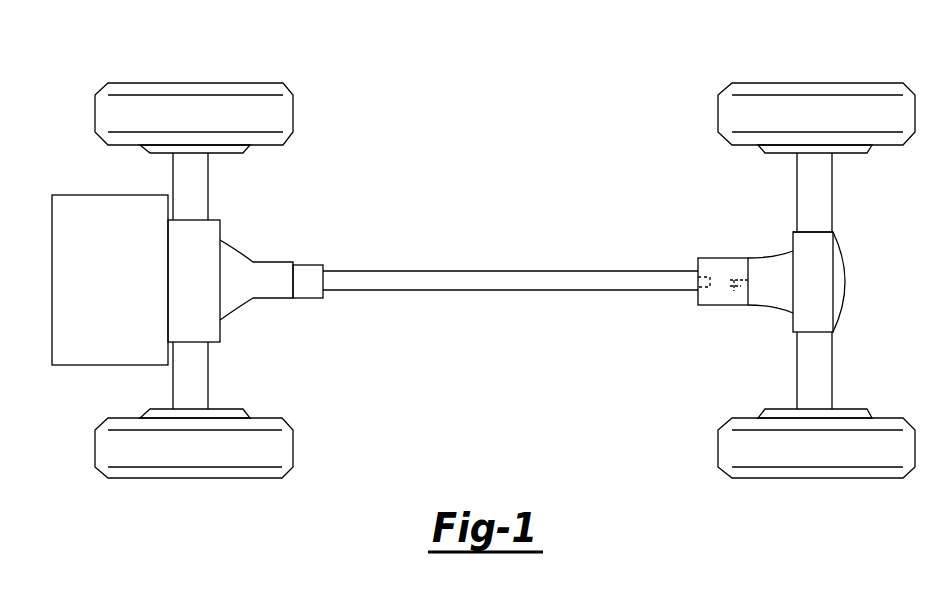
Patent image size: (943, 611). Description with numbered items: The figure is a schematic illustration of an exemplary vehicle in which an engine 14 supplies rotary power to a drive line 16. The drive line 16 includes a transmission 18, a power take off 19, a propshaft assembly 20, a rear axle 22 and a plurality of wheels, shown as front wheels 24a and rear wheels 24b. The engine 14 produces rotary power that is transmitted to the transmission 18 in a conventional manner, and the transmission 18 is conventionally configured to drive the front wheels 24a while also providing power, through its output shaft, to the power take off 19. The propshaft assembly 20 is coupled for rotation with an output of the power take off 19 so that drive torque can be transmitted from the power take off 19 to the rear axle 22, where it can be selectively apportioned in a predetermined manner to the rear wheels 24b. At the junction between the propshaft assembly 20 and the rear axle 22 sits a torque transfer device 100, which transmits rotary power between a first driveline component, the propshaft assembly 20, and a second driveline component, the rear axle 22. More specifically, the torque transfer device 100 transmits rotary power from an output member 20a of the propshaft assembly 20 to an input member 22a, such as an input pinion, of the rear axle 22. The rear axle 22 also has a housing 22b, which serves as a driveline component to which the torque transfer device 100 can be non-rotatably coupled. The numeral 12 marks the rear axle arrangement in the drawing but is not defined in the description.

The rear axle assembly 12 is at (745, 213).
The engine 14 is at (88, 210).
The drive line 16 is at (324, 314).
The transmission 18 is at (208, 230).
The power take off 19 is at (278, 293).
The propshaft assembly 20 is at (463, 283).
The output member 20a is at (704, 270).
The rear axle 22 is at (820, 287).
The input member 22a is at (732, 296).
The housing 22b is at (825, 249).
The front wheels 24a is at (233, 83).
The rear wheels 24b is at (768, 83).
The torque transfer device 100 is at (710, 302).